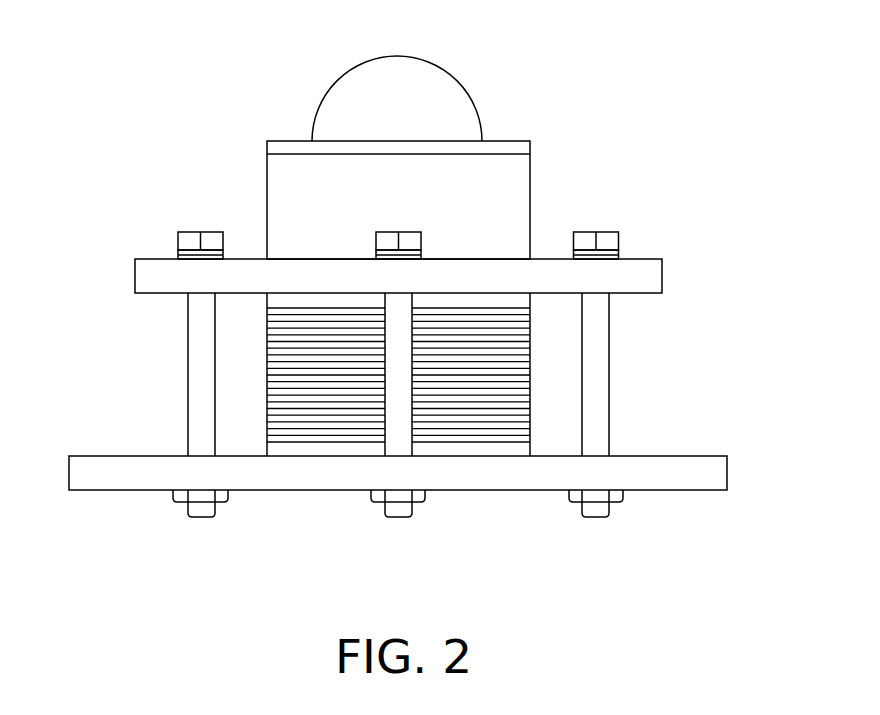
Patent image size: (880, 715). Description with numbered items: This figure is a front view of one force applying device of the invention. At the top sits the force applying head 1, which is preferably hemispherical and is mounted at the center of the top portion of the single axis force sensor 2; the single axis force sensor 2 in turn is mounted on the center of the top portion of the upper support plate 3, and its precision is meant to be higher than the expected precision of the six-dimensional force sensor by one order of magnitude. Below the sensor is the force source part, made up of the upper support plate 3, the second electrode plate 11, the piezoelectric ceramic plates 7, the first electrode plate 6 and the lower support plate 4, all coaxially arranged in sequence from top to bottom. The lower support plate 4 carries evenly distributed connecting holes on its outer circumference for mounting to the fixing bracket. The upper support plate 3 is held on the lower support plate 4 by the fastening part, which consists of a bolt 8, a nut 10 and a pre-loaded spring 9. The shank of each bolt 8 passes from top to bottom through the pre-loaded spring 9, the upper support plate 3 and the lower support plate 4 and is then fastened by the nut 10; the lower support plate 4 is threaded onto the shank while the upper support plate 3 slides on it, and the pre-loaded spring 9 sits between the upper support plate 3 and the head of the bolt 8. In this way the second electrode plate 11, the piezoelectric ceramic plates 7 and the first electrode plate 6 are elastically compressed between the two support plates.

The force applying head 1 is at (413, 91).
The single axis force sensor 2 is at (503, 212).
The upper support plate 3 is at (635, 277).
The lower support plate 4 is at (657, 470).
The first electrode plate 6 is at (288, 450).
The piezoelectric ceramic plates 7 is at (317, 373).
The bolt 8 is at (208, 232).
The pre-loaded spring 9 is at (175, 257).
The nut 10 is at (577, 493).
The second electrode plate 11 is at (290, 302).